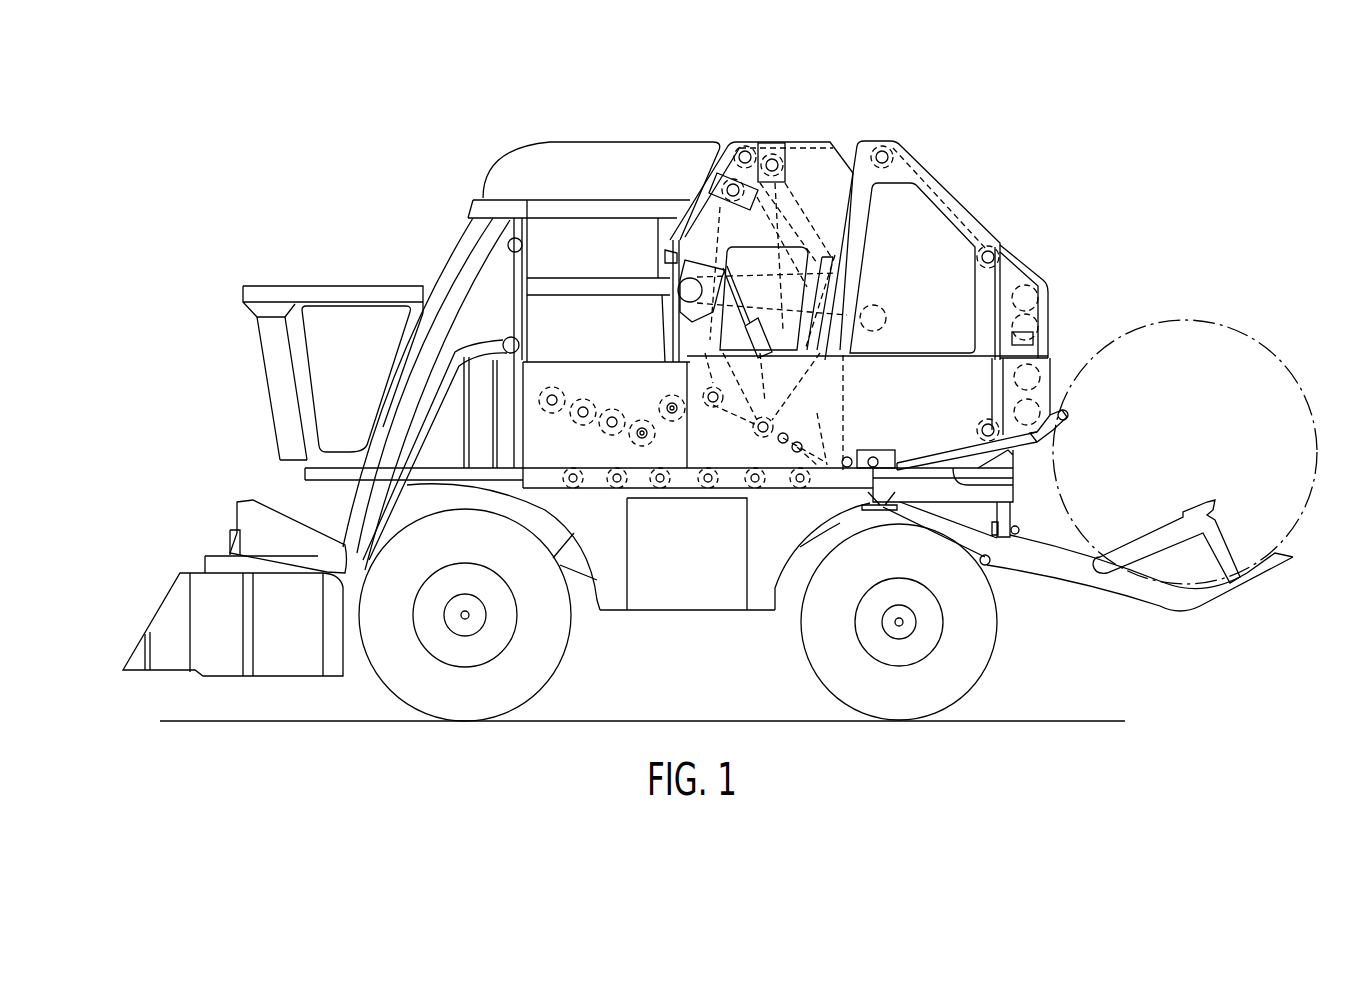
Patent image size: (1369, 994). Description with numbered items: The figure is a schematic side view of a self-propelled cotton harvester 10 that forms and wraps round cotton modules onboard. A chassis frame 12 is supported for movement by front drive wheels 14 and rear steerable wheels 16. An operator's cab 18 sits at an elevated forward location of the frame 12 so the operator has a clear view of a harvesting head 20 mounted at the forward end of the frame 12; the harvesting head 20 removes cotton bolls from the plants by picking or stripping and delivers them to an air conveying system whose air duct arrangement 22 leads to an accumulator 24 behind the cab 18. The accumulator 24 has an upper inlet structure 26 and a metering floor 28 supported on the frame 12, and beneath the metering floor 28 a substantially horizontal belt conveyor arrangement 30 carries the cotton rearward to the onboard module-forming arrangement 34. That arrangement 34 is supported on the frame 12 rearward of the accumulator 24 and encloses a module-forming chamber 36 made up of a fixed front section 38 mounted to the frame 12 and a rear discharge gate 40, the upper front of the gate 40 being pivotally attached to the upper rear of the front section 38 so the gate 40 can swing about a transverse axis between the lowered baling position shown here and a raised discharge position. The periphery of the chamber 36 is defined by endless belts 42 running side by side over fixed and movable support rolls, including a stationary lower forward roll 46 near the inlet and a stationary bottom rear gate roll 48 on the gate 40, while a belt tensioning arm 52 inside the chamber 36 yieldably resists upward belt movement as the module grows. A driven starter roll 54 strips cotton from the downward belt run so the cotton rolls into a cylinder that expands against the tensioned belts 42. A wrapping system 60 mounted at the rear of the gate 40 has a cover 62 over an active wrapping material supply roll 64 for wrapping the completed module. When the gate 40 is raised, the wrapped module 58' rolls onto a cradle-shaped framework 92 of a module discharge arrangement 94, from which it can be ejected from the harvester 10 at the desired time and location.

The cotton harvester 10 is at (250, 112).
The chassis frame 12 is at (780, 488).
The front drive wheels 14 is at (560, 663).
The rear steerable wheels 16 is at (988, 663).
The cab 18 is at (348, 283).
The harvesting head 20 is at (165, 602).
The air duct arrangement 22 is at (460, 257).
The accumulator 24 is at (614, 118).
The upper inlet structure 26 is at (622, 183).
The metering floor 28 is at (645, 397).
The belt conveyor arrangement 30 is at (598, 458).
The module-forming arrangement 34 is at (875, 127).
The module-forming chamber 36 is at (917, 223).
The front section 38 is at (800, 140).
The discharge gate 40 is at (924, 170).
The belts 42 is at (998, 225).
The lower forward roll 46 is at (728, 321).
The bottom rear gate roll 48 is at (988, 418).
The belt tensioning arm 52 is at (876, 308).
The starter roll 54 is at (800, 432).
The wrapped module 58' is at (1185, 433).
The wrapping system 60 is at (1063, 303).
The cover 62 is at (1020, 268).
The wrapping material supply roll 64 is at (1053, 410).
The cradle-shaped framework 92 is at (1183, 604).
The module discharge arrangement 94 is at (1249, 595).